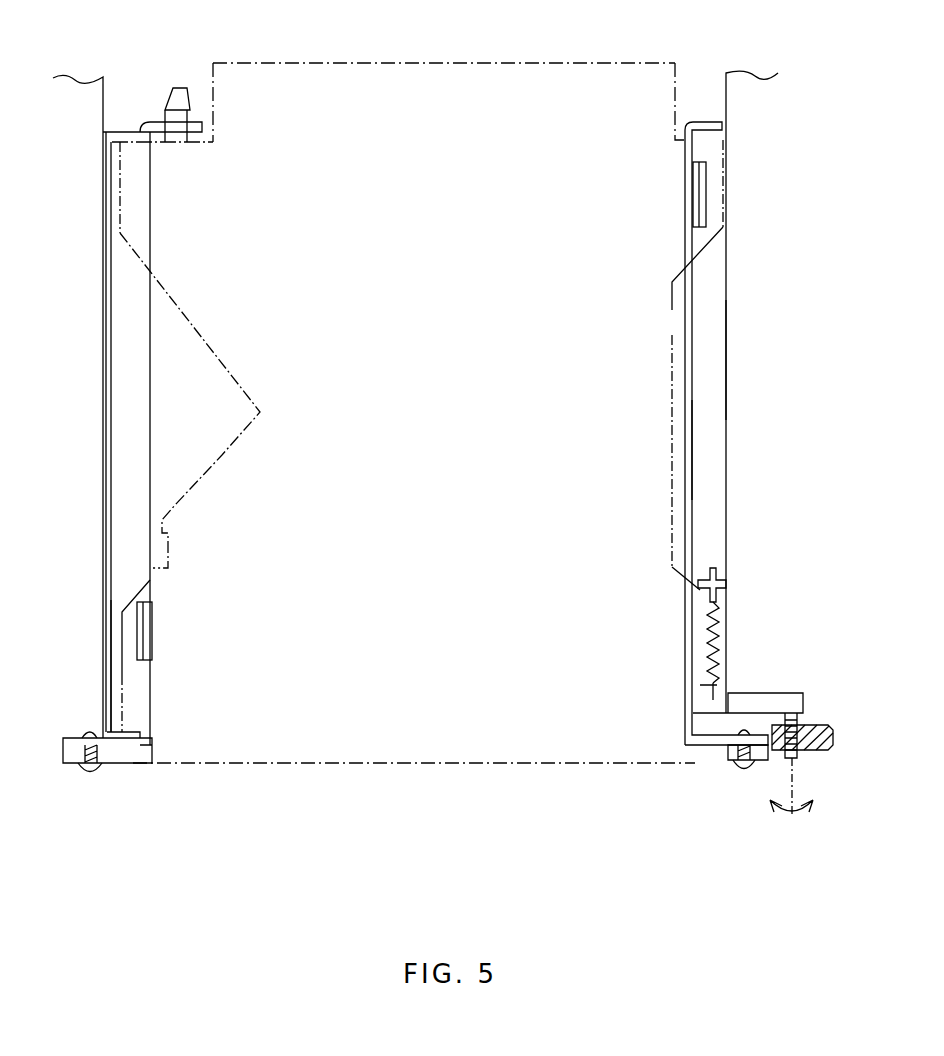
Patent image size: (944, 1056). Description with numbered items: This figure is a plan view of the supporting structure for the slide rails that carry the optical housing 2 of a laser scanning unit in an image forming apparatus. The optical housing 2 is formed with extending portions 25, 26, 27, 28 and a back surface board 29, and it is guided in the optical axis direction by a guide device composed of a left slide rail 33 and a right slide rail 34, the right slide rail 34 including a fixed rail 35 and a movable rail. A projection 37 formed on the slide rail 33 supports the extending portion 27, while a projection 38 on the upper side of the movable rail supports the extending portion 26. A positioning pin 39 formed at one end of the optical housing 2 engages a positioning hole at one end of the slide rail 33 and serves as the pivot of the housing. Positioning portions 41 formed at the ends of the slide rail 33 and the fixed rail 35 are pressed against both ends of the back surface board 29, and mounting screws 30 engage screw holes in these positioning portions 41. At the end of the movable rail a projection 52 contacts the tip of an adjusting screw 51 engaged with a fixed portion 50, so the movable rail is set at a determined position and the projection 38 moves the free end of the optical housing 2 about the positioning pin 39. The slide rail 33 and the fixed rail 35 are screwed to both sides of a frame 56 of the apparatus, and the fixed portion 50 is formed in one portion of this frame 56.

The optical housing 2 is at (295, 765).
The extending portion 25 is at (725, 608).
The extending portion 26 is at (705, 250).
The extending portion 27 is at (102, 673).
The extending portion 28 is at (128, 180).
The back surface board 29 is at (447, 765).
The mounting screw 30 is at (95, 775).
The left slide rail 33 is at (143, 693).
The right slide rail 34 is at (690, 328).
The fixed rail 35 is at (693, 442).
The projection 37 is at (145, 620).
The projection 38 is at (693, 197).
The positioning pin 39 is at (188, 98).
The positioning portion 41 is at (120, 747).
The fixed portion 50 is at (820, 747).
The adjusting screw 51 is at (795, 760).
The projection 52 is at (762, 702).
The frame 56 is at (720, 357).